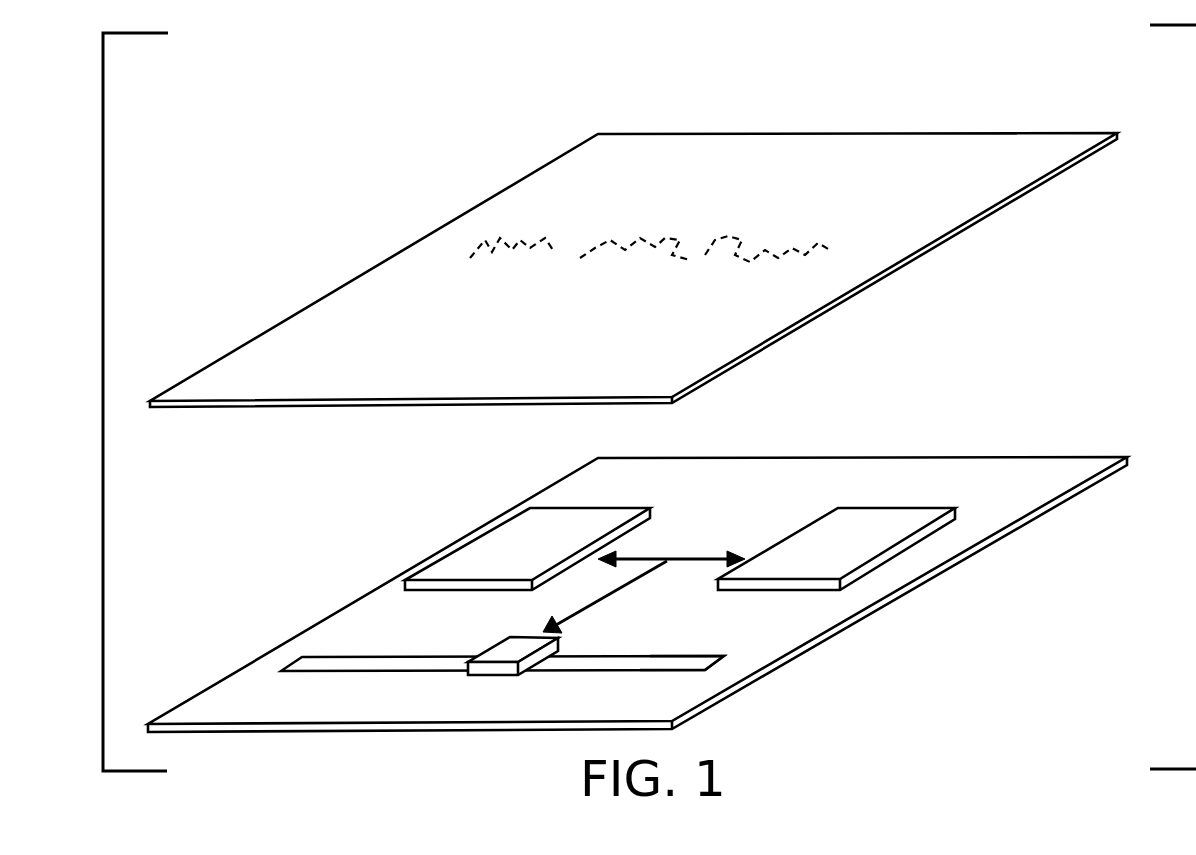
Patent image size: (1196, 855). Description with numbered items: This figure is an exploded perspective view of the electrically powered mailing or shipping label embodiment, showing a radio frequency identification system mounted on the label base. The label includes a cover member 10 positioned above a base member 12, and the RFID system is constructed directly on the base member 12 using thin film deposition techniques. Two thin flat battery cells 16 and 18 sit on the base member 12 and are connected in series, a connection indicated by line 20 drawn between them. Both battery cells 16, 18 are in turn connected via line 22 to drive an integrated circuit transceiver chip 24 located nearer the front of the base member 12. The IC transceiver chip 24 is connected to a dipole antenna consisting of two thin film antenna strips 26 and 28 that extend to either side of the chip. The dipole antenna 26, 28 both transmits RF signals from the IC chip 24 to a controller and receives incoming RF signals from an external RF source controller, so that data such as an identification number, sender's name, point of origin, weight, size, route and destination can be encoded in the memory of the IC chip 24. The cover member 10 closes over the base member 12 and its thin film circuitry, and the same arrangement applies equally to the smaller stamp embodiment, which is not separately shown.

The cover member 10 is at (663, 133).
The base member 12 is at (1127, 457).
The thin flat battery cell 16 is at (561, 545).
The thin flat battery cell 18 is at (870, 545).
The line 20 is at (688, 559).
The line 22 is at (636, 580).
The integrated circuit transceiver chip 24 is at (482, 668).
The thin film antenna strip 26 is at (385, 660).
The thin film antenna strip 28 is at (695, 662).